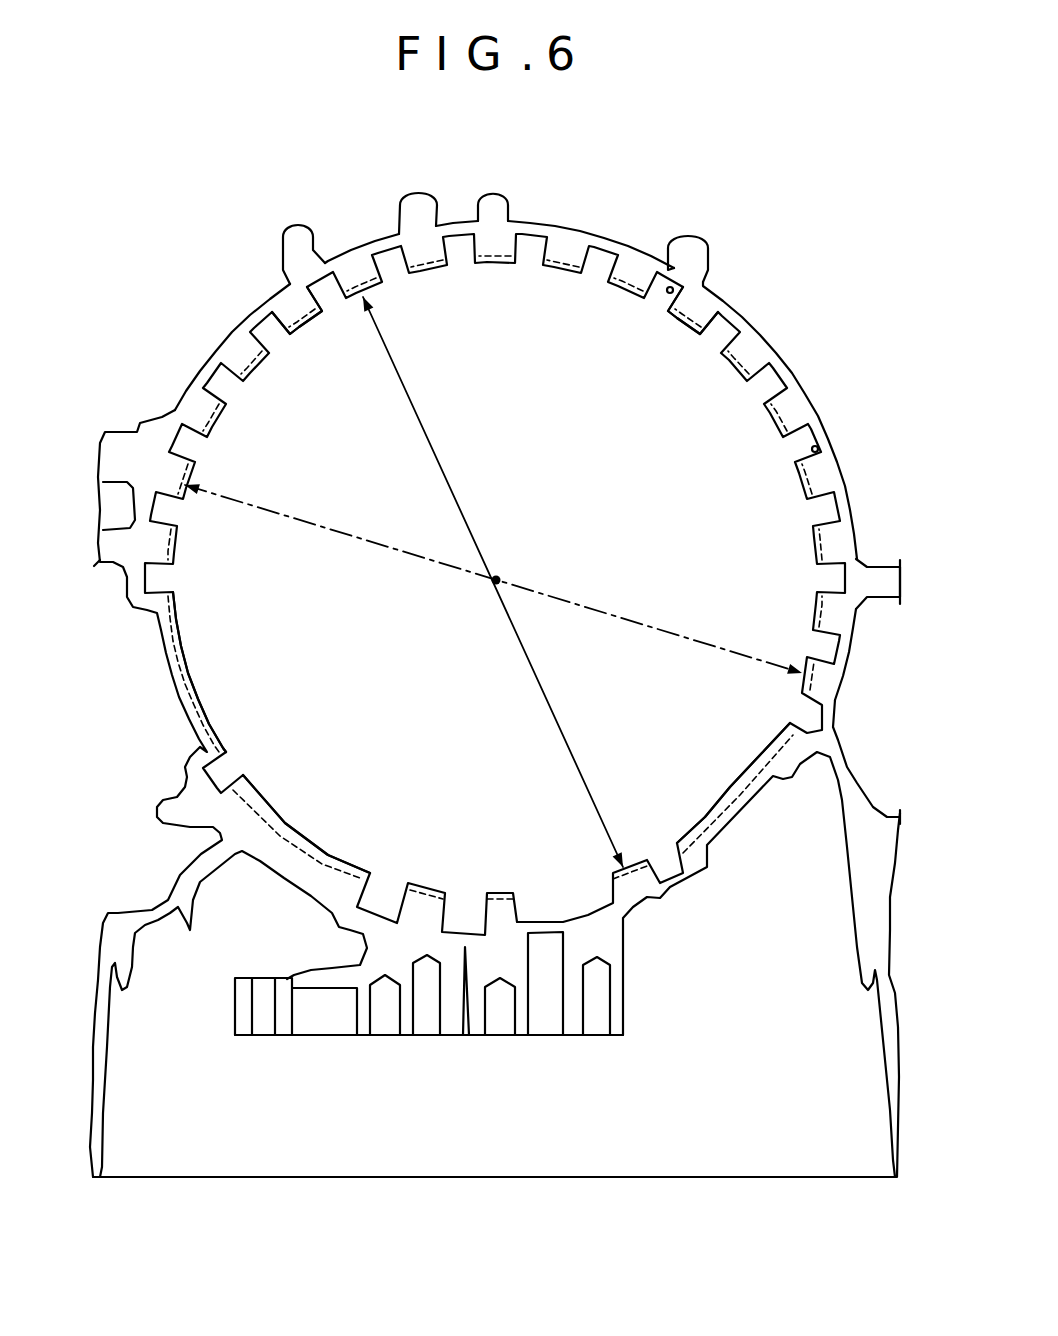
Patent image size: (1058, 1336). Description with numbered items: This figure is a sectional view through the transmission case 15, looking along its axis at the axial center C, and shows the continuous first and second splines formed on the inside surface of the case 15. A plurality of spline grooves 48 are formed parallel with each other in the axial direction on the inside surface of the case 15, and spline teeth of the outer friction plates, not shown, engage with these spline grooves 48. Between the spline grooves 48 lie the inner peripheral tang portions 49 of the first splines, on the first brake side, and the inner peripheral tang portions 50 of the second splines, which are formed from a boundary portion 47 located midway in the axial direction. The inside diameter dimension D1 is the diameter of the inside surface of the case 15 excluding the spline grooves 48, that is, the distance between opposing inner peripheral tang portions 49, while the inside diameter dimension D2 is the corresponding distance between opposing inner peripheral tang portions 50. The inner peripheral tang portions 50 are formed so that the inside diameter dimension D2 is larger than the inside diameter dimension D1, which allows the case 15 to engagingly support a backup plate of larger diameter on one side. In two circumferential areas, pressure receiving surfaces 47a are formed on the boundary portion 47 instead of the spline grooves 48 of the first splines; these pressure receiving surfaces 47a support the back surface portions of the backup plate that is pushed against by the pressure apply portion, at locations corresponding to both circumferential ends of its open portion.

The case 15 is at (603, 236).
The boundary portion 47 is at (713, 302).
The pressure receiving surface 47a is at (288, 827).
The spline groove 48 is at (673, 293).
The inner peripheral tang portion 49 is at (306, 322).
The inner peripheral tang portion 50 is at (215, 428).
The inside diameter dimension D1 is at (473, 497).
The inside diameter dimension D2 is at (597, 608).
The axial center C is at (503, 575).